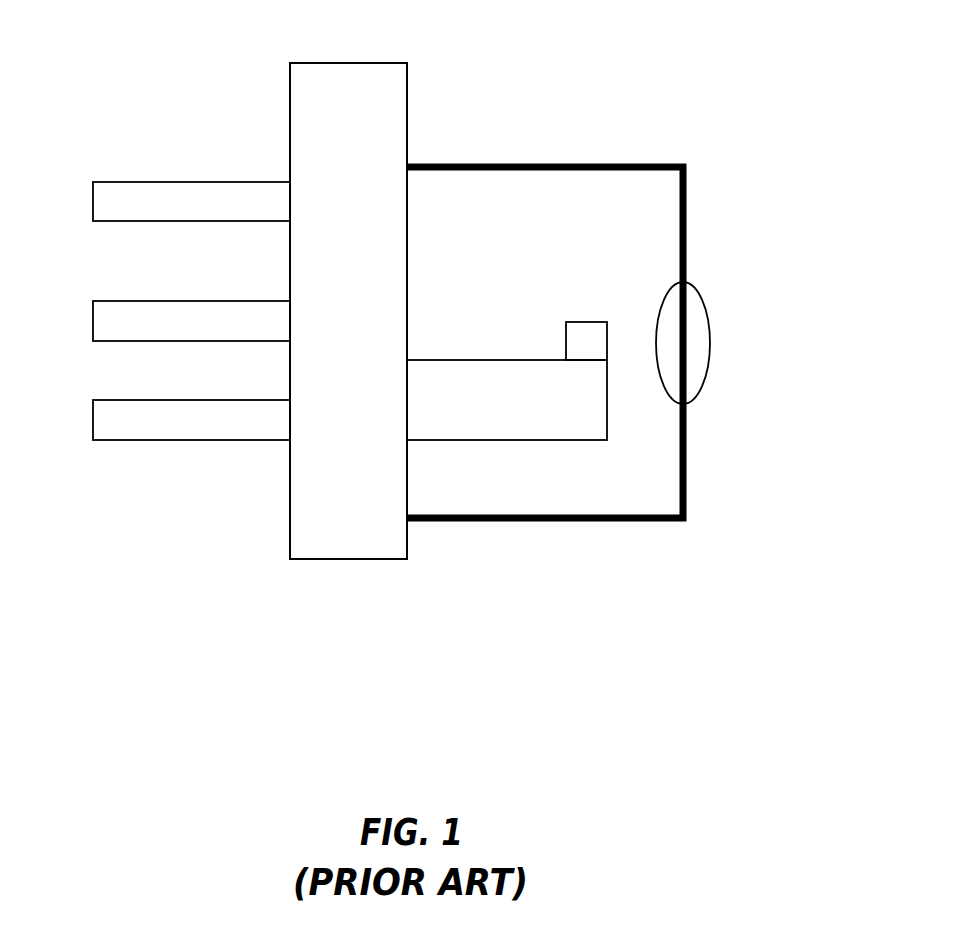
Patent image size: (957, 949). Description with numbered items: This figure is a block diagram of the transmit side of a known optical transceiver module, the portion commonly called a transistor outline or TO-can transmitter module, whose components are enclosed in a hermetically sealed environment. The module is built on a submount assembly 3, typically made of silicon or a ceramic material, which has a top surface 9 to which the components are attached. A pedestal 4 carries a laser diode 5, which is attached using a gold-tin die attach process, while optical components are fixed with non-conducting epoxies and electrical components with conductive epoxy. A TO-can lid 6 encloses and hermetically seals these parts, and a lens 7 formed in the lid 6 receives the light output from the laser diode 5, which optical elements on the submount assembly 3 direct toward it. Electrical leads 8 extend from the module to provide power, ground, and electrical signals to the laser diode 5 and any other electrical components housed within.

The submount assembly 3 is at (321, 559).
The pedestal 4 is at (552, 440).
The laser diode 5 is at (565, 338).
The TO-can lid 6 is at (687, 177).
The lens 7 is at (704, 302).
The electrical leads 8 is at (92, 201).
The top surface 9 is at (408, 114).